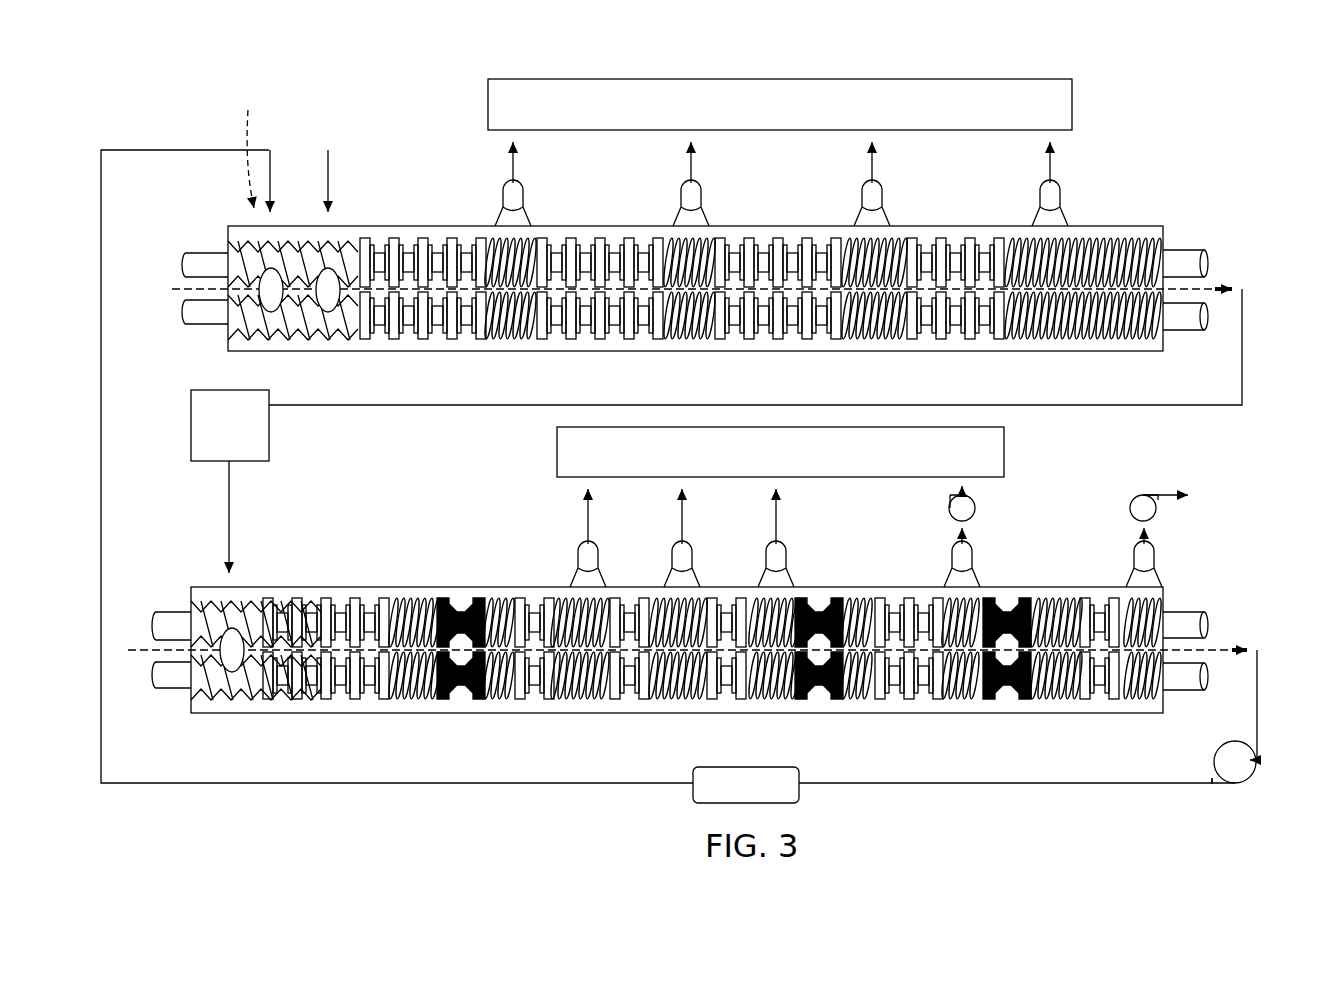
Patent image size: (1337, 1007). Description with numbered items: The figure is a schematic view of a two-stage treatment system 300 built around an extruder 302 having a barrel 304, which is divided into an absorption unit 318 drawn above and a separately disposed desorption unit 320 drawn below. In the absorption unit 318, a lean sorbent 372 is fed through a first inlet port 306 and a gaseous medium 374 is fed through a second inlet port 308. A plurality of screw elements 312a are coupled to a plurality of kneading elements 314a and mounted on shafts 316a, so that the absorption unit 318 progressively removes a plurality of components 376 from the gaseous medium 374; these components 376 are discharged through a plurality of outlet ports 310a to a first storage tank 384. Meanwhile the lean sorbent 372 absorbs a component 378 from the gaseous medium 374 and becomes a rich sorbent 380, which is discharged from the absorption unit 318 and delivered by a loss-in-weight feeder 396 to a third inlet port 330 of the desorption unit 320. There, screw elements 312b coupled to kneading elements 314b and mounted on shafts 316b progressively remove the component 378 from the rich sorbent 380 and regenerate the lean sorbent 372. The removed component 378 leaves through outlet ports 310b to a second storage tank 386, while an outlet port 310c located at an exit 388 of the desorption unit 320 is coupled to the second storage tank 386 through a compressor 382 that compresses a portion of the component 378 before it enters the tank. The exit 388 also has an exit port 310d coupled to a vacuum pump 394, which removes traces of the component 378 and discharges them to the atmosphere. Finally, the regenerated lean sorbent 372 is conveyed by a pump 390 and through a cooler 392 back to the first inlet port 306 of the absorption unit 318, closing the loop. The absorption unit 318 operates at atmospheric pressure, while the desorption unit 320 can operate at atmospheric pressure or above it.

The treatment system 300 is at (203, 83).
The extruder 302 is at (256, 148).
The barrel 304 is at (396, 225).
The first inlet port 306 is at (266, 272).
The second inlet port 308 is at (326, 305).
The outlet ports 310a is at (690, 195).
The outlet ports 310b is at (585, 556).
The outlet port 310c is at (968, 556).
The exit port 310d is at (1138, 582).
The screw elements 312a is at (333, 243).
The screw elements 312b is at (240, 600).
The kneading elements 314a is at (483, 235).
The kneading elements 314b is at (382, 597).
The shafts 316a is at (205, 252).
The shafts 316b is at (172, 612).
The absorption unit 318 is at (674, 254).
The desorption unit 320 is at (718, 605).
The third inlet port 330 is at (207, 633).
The lean sorbent 372 is at (272, 160).
The gaseous medium 374 is at (330, 160).
The components 376 is at (503, 190).
The component 378 is at (592, 521).
The rich sorbent 380 is at (318, 405).
The compressor 382 is at (978, 500).
The first storage tank 384 is at (800, 113).
The second storage tank 386 is at (795, 461).
The exit 388 is at (1068, 713).
The pump 390 is at (1234, 741).
The cooler 392 is at (766, 793).
The vacuum pump 394 is at (1150, 492).
The loss-in-weight feeder 396 is at (168, 408).